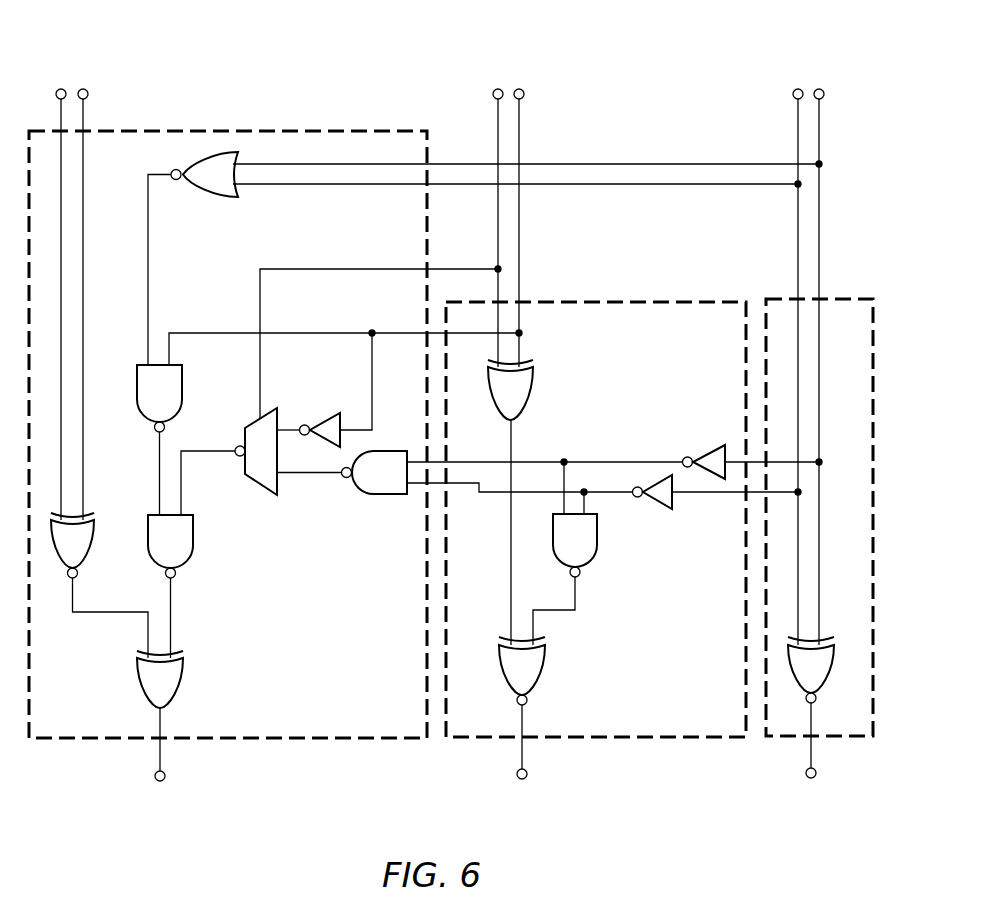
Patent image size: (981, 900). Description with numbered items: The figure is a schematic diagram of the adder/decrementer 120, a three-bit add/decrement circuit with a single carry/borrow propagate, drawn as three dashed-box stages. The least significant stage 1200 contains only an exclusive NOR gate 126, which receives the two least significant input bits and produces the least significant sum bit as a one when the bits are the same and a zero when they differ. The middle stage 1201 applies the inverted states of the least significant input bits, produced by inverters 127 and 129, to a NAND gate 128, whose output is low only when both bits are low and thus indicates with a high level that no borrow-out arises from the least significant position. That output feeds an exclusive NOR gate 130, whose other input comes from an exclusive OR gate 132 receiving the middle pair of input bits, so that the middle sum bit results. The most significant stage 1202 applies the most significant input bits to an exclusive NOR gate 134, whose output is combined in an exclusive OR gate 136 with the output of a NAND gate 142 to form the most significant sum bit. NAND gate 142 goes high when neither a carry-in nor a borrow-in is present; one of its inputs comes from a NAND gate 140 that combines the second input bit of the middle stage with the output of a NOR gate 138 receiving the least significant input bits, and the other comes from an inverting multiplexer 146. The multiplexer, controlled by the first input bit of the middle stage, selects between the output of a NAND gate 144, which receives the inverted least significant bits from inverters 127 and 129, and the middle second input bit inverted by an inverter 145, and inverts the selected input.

The adder/decrementer 120 is at (648, 70).
The most significant bit stage 1202 is at (381, 128).
The middle stage 1201 is at (703, 298).
The least significant stage 1200 is at (849, 298).
The exclusive NOR gate 126 is at (826, 680).
The inverter 127 is at (704, 447).
The NAND gate 128 is at (594, 565).
The inverter 129 is at (654, 510).
The exclusive NOR gate 130 is at (541, 678).
The exclusive OR gate 132 is at (535, 380).
The exclusive NOR gate 134 is at (92, 562).
The exclusive OR gate 136 is at (137, 687).
The NOR gate 138 is at (198, 198).
The NAND gate 140 is at (184, 385).
The NAND gate 142 is at (192, 566).
The NAND gate 144 is at (374, 495).
The inverter 145 is at (328, 412).
The inverting multiplexer 146 is at (262, 491).